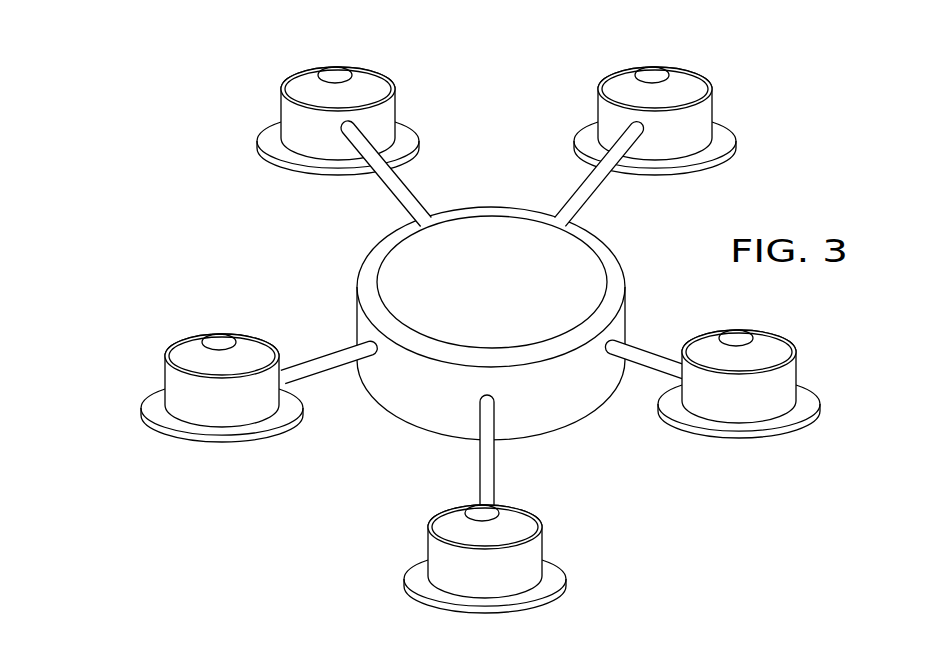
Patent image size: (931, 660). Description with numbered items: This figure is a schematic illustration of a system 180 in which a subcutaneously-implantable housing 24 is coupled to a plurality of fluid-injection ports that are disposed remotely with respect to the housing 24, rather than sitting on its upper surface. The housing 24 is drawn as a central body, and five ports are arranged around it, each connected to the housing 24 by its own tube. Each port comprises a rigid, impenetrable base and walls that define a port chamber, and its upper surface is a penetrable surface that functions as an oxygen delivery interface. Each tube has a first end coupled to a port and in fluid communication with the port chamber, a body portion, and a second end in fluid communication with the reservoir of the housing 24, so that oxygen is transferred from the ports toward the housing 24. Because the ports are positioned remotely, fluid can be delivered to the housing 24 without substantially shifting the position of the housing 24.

The system 180 is at (450, 323).
The subcutaneously-implantable housing 24 is at (508, 289).